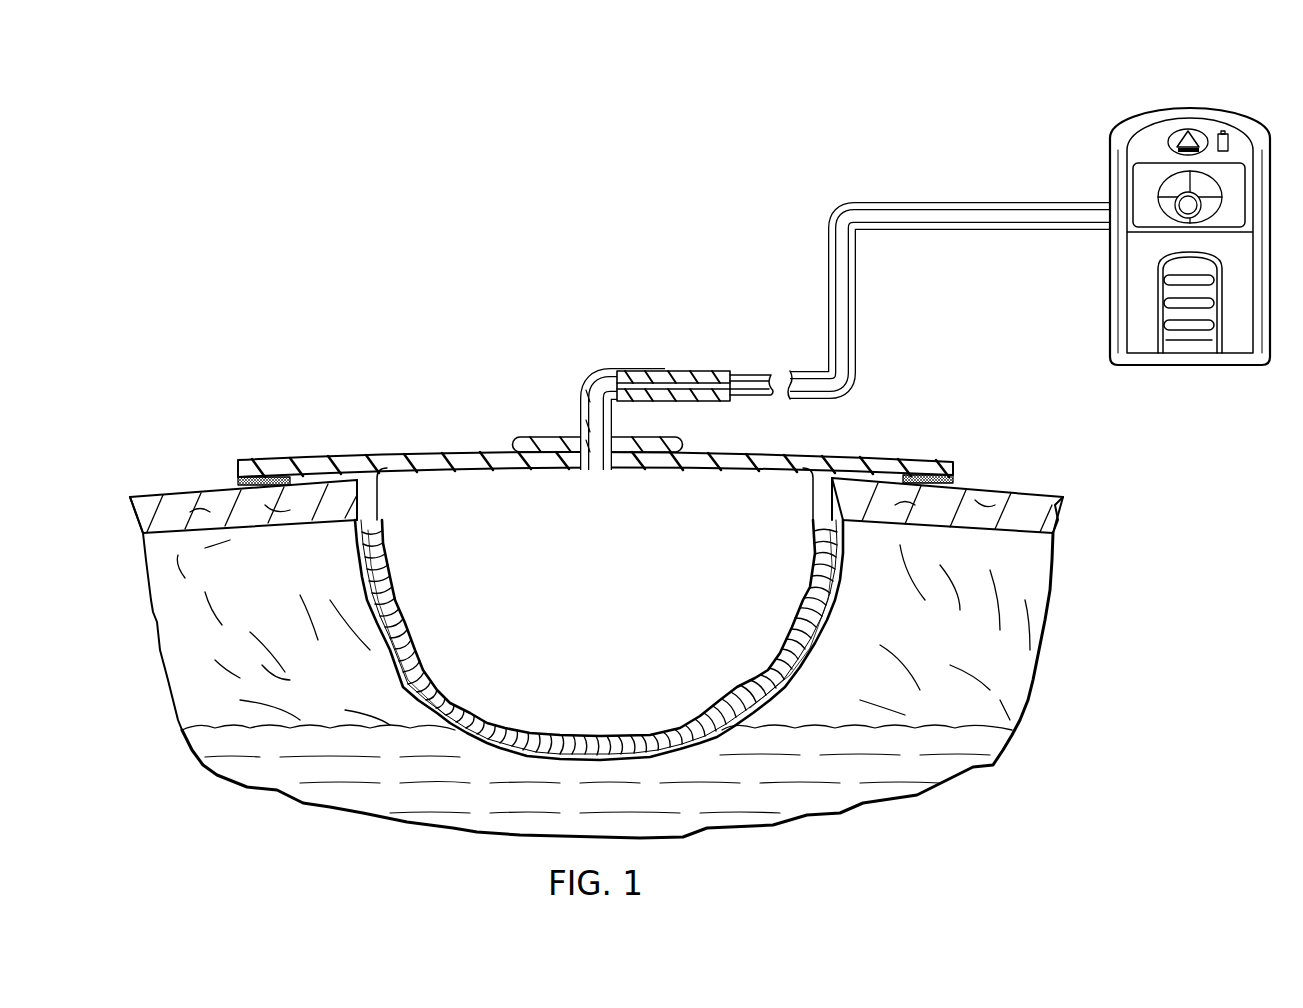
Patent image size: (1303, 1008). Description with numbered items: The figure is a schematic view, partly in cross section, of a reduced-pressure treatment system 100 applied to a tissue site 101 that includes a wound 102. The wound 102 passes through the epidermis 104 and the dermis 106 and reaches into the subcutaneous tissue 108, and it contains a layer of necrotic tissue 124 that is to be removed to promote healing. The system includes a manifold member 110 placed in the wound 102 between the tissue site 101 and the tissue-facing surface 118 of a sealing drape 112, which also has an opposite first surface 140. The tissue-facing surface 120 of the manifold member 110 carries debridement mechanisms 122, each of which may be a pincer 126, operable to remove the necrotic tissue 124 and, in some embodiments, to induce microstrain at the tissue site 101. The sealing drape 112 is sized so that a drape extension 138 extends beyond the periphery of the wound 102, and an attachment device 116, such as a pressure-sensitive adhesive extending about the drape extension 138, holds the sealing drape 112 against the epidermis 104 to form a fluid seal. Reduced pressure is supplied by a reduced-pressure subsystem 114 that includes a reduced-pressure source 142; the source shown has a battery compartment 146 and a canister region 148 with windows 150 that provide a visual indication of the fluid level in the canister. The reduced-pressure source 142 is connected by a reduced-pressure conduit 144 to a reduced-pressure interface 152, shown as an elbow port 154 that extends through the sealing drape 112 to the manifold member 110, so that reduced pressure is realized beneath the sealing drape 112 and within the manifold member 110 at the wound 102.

The reduced-pressure treatment system 100 is at (486, 240).
The tissue site 101 is at (612, 640).
The wound 102 is at (346, 539).
The epidermis 104 is at (145, 492).
The dermis 106 is at (287, 681).
The subcutaneous tissue 108 is at (619, 811).
The manifold member 110 is at (620, 614).
The sealing drape 112 is at (595, 458).
The reduced-pressure subsystem 114 is at (1164, 232).
The attachment device 116 is at (238, 480).
The tissue-facing surface 118 is at (372, 470).
The tissue-facing surface 120 is at (380, 648).
The debridement mechanism 122 is at (372, 604).
The necrotic tissue 124 is at (845, 545).
The pincer 126 is at (830, 600).
The drape extension 138 is at (880, 454).
The first surface 140 is at (473, 450).
The reduced-pressure source 142 is at (1246, 121).
The reduced-pressure conduit 144 is at (826, 295).
The battery compartment 146 is at (1142, 176).
The canister region 148 is at (1190, 346).
The windows 150 is at (1162, 280).
The reduced-pressure interface 152 is at (578, 371).
The elbow port 154 is at (636, 370).